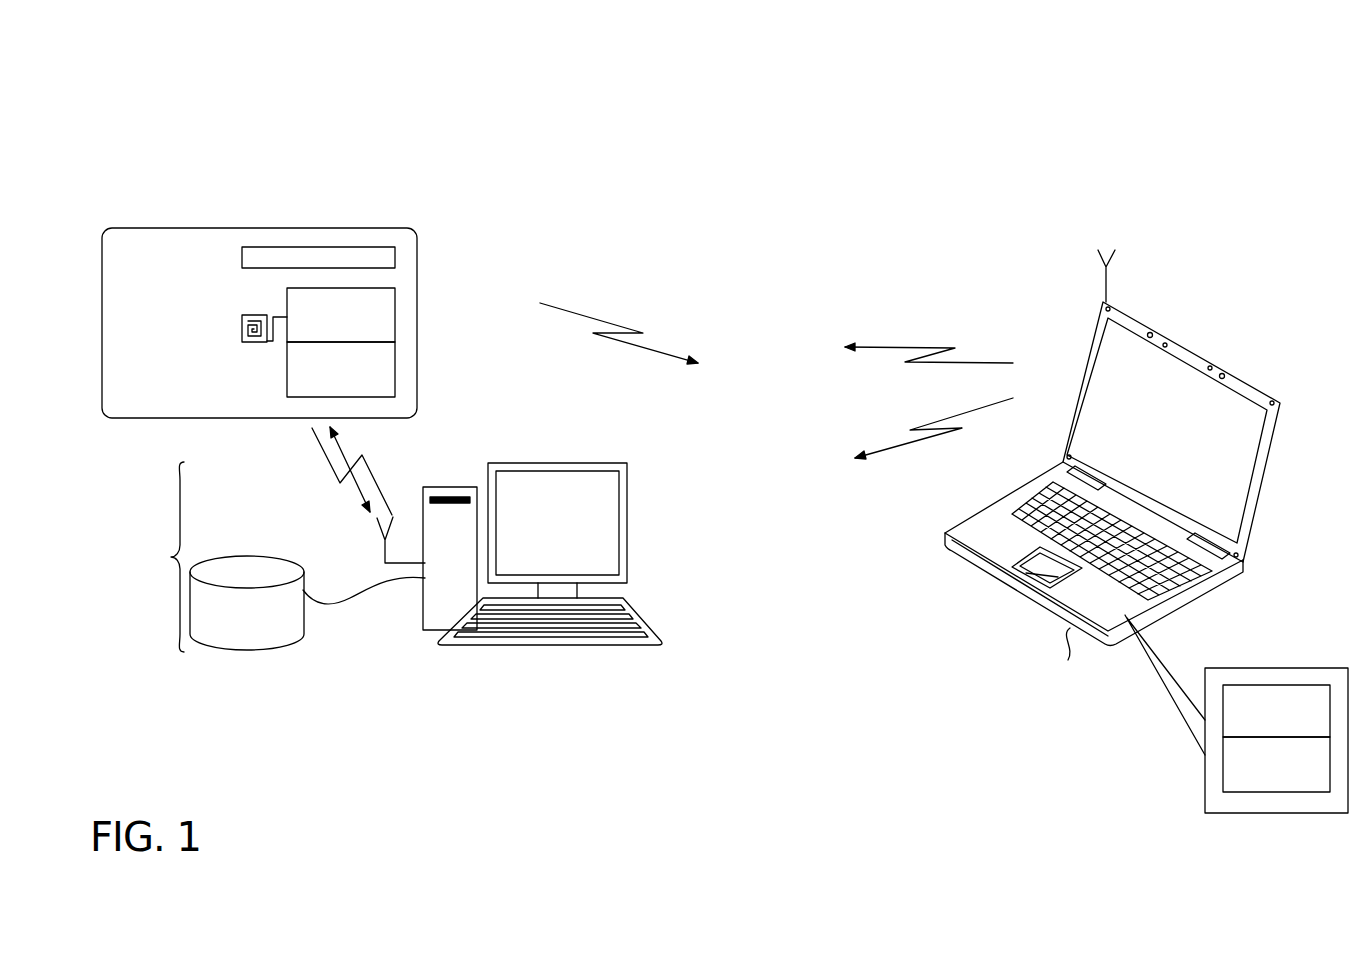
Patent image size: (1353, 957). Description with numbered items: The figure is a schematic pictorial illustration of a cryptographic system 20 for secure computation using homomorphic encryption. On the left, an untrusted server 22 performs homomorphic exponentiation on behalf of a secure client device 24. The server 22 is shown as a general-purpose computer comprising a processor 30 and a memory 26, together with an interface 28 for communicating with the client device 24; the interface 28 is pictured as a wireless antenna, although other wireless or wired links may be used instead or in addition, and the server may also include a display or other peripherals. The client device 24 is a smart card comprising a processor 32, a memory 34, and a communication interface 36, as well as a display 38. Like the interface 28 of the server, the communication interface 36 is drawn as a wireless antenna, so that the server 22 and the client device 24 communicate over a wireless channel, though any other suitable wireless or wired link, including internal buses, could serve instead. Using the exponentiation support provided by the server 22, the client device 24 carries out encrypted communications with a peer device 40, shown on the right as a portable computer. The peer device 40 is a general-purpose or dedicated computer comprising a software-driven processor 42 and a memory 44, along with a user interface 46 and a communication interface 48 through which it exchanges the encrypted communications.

The cryptographic system 20 is at (92, 122).
The untrusted server 22 is at (159, 557).
The secure client device 24 is at (417, 281).
The memory 26 is at (304, 624).
The interface 28 is at (378, 533).
The processor 30 is at (430, 633).
The processor 32 is at (395, 314).
The memory 34 is at (395, 365).
The communication interface 36 is at (242, 330).
The display 38 is at (242, 258).
The peer device 40 is at (1262, 527).
The processor 42 is at (1283, 685).
The memory 44 is at (1286, 792).
The user interface 46 is at (1068, 657).
The communication interface 48 is at (1098, 258).